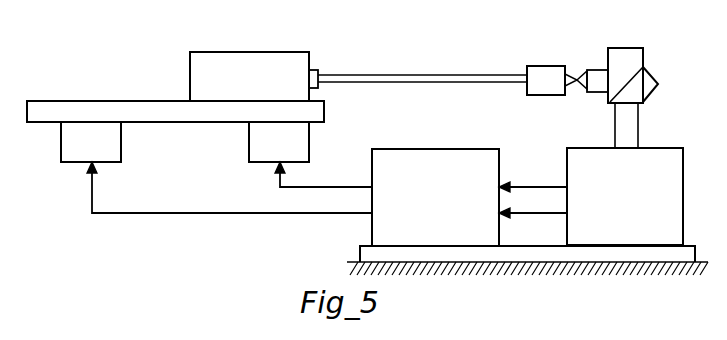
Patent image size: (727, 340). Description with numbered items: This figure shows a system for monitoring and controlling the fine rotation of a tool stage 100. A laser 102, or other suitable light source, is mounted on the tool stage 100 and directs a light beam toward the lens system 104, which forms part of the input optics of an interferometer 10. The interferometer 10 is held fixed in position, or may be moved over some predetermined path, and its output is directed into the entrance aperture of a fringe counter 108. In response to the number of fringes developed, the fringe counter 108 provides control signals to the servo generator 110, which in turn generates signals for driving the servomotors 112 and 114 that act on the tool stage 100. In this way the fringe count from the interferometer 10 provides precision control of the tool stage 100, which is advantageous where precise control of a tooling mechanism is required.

The interferometer 10 is at (628, 48).
The tool stage 100 is at (77, 101).
The laser 102 is at (271, 52).
The lens system 104 is at (541, 66).
The fringe counter 108 is at (653, 148).
The servo generator 110 is at (456, 149).
The servomotor 112 is at (307, 163).
The servomotor 114 is at (119, 163).